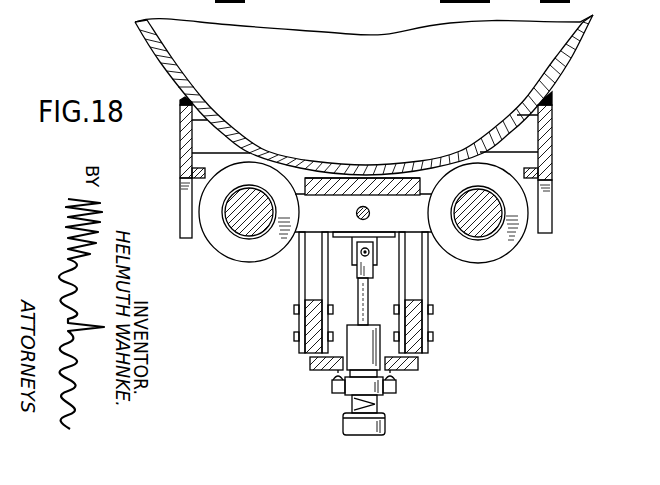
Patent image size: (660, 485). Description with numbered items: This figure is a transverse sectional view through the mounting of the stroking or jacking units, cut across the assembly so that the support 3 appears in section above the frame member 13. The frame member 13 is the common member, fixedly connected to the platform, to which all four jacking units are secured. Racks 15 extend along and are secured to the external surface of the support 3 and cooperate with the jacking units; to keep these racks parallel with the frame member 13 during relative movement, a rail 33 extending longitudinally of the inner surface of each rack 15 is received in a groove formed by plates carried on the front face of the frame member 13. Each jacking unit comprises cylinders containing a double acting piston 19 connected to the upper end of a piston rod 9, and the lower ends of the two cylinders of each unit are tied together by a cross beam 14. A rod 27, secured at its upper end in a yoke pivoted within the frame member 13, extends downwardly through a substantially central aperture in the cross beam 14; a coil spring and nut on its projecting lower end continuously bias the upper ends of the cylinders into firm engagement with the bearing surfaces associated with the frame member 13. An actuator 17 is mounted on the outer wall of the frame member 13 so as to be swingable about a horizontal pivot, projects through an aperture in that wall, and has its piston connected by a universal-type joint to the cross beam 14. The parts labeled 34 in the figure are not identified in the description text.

The support 3 is at (575, 55).
The piston rod 9 is at (243, 222).
The frame member 13 is at (324, 176).
The cross beam 14 is at (401, 176).
The rack 15 is at (180, 160).
The actuator 17 is at (380, 407).
The double acting piston 19 is at (479, 235).
The rod 27 is at (356, 213).
The rail 33 is at (552, 150).
The support plates 34 is at (322, 283).